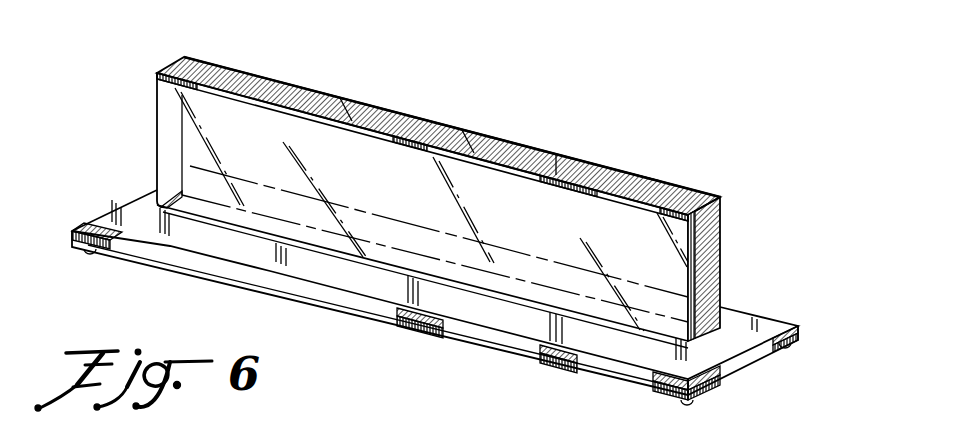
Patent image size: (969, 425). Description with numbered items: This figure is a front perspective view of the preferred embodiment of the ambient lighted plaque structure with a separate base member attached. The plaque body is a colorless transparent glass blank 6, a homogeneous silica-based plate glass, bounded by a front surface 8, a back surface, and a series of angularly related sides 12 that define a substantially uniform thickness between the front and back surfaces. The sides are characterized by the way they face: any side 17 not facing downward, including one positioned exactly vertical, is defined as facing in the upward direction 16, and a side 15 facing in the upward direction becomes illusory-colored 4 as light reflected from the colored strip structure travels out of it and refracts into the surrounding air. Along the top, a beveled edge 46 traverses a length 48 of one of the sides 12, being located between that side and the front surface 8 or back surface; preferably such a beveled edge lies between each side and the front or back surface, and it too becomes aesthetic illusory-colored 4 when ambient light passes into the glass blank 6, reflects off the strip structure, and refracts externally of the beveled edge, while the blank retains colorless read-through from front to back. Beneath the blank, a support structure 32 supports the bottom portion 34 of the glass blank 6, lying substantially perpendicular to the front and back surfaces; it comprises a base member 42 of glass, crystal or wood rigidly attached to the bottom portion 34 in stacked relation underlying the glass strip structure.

The illusory-colored sides 4 is at (289, 88).
The colorless transparent glass blank 6 is at (222, 132).
The front surface 8 is at (399, 198).
The angularly related sides 12 is at (245, 75).
The side facing in an upward direction 15 is at (557, 157).
The upward direction 16 is at (640, 176).
The side 17 is at (720, 232).
The support structure 32 is at (142, 215).
The bottom portion 34 is at (462, 273).
The base member 42 is at (743, 353).
The beveled edge 46 is at (487, 143).
The length 48 is at (365, 107).